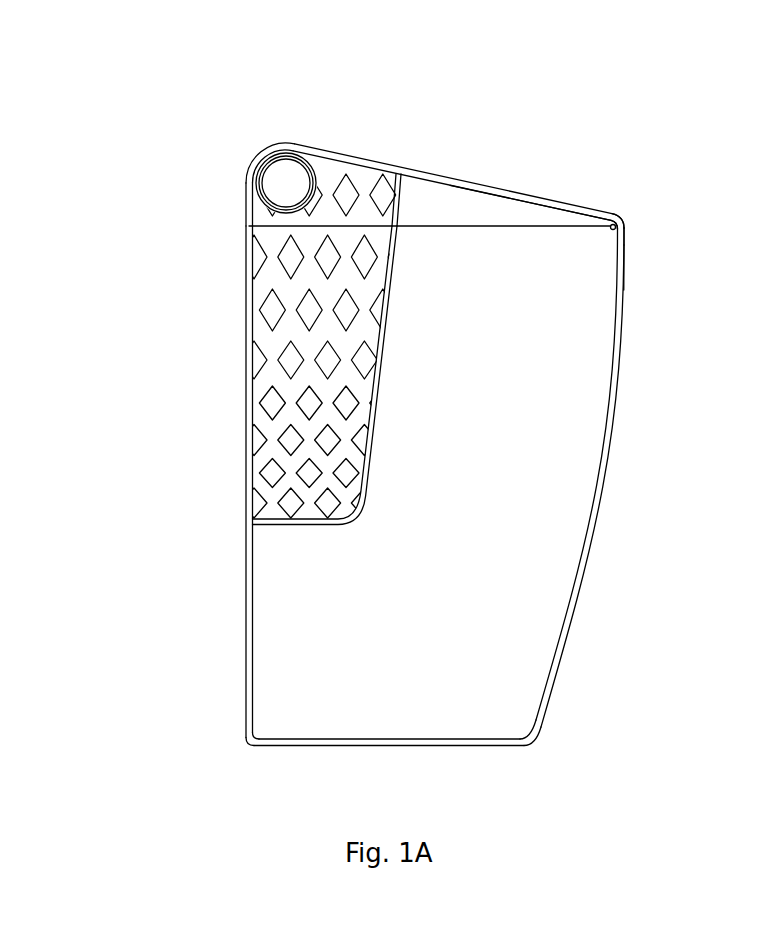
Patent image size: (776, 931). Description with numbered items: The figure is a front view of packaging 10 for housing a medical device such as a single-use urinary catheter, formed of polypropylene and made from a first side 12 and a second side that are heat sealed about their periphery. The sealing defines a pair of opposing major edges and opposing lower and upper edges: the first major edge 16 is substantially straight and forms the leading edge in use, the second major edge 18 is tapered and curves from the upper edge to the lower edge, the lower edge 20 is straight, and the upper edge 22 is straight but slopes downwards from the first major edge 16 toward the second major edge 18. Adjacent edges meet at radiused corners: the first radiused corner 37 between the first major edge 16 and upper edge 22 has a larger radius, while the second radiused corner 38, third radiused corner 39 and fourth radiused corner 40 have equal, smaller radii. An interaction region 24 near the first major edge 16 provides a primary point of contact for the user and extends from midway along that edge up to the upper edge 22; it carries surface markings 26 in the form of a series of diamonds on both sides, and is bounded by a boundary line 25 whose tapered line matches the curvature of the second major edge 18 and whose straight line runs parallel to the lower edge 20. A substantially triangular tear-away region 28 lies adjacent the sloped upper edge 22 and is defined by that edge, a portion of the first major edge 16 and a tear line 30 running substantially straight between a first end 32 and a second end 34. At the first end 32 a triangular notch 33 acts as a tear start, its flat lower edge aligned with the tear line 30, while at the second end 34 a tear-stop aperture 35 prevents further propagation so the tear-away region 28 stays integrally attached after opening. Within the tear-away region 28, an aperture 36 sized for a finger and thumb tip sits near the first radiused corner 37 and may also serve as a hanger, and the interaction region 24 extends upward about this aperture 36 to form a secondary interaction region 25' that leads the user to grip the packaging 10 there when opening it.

The packaging 10 is at (186, 344).
The first side 12 is at (450, 429).
The first major edge 16 is at (248, 597).
The second major edge 18 is at (614, 424).
The lower edge 20 is at (303, 746).
The upper edge 22 is at (448, 175).
The interaction region 24 is at (258, 383).
The boundary line 25 is at (357, 375).
The secondary interaction region 25' is at (365, 147).
The surface markings 26 is at (262, 473).
The tear-away region 28 is at (512, 213).
The tear line 30 is at (628, 262).
The first end 32 is at (248, 220).
The notch 33 is at (250, 226).
The second end 34 is at (628, 220).
The aperture 35 is at (615, 214).
The aperture 36 is at (281, 172).
The first radiused corner 37 is at (255, 146).
The second radiused corner 38 is at (628, 231).
The third radiused corner 39 is at (528, 748).
The fourth radiused corner 40 is at (248, 742).